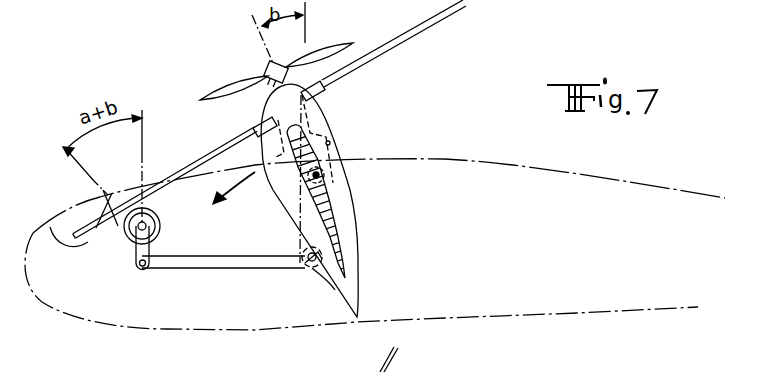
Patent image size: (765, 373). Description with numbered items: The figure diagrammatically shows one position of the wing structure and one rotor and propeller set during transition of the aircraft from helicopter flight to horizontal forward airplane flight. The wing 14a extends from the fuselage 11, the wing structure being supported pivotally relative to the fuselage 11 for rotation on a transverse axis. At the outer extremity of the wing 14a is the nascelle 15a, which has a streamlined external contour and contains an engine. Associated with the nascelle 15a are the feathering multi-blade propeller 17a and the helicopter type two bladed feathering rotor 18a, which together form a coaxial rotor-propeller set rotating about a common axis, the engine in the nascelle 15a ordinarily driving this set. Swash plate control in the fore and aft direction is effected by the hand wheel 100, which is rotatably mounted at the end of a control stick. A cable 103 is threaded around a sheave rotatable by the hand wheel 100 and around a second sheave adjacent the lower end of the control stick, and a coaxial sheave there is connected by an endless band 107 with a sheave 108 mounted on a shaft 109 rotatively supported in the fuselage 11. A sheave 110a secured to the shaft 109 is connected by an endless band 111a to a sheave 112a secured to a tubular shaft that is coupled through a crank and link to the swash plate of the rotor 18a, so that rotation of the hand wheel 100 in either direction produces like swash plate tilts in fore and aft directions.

The fuselage 11 is at (95, 0).
The wing 14a is at (342, 230).
The nascelle 15a is at (352, 192).
The propeller 17a is at (240, 72).
The rotor 18a is at (367, 72).
The hand wheel 100 is at (160, 217).
The cable 103 is at (151, 250).
The endless band 107 is at (263, 268).
The sheave 108 is at (312, 263).
The shaft 109 is at (318, 250).
The sheave 110a is at (316, 268).
The endless band 111a is at (296, 204).
The sheave 112a is at (297, 176).